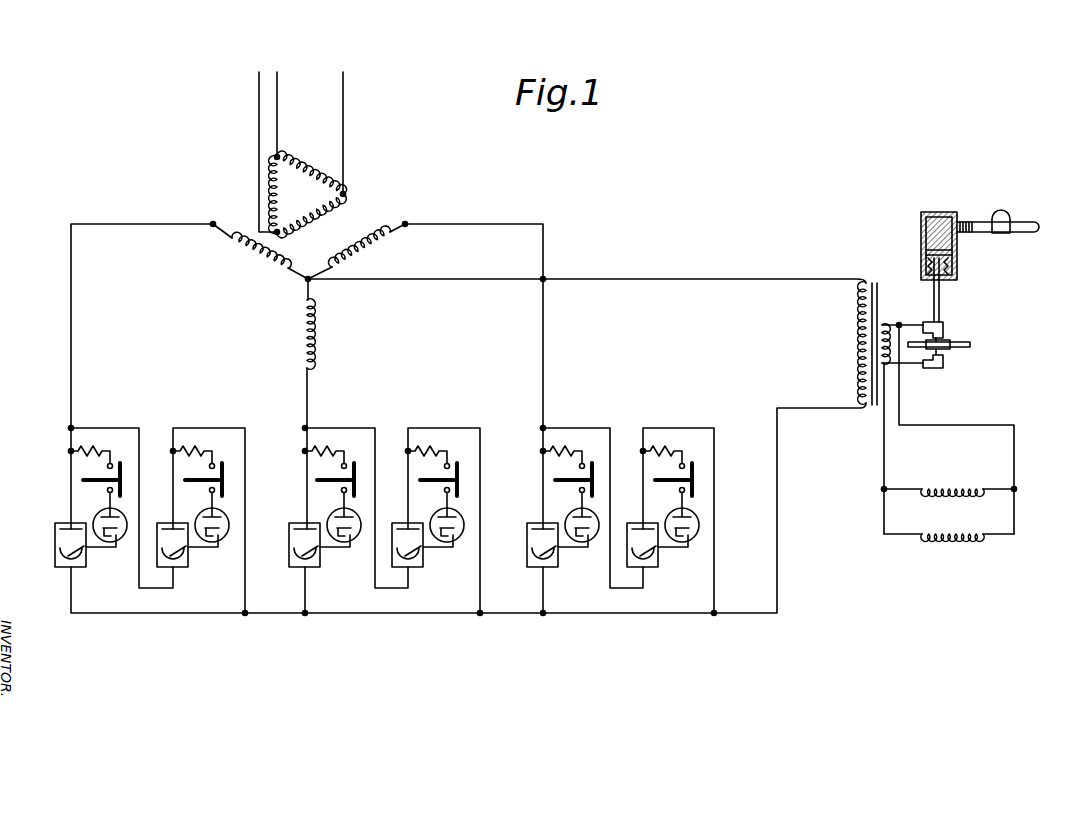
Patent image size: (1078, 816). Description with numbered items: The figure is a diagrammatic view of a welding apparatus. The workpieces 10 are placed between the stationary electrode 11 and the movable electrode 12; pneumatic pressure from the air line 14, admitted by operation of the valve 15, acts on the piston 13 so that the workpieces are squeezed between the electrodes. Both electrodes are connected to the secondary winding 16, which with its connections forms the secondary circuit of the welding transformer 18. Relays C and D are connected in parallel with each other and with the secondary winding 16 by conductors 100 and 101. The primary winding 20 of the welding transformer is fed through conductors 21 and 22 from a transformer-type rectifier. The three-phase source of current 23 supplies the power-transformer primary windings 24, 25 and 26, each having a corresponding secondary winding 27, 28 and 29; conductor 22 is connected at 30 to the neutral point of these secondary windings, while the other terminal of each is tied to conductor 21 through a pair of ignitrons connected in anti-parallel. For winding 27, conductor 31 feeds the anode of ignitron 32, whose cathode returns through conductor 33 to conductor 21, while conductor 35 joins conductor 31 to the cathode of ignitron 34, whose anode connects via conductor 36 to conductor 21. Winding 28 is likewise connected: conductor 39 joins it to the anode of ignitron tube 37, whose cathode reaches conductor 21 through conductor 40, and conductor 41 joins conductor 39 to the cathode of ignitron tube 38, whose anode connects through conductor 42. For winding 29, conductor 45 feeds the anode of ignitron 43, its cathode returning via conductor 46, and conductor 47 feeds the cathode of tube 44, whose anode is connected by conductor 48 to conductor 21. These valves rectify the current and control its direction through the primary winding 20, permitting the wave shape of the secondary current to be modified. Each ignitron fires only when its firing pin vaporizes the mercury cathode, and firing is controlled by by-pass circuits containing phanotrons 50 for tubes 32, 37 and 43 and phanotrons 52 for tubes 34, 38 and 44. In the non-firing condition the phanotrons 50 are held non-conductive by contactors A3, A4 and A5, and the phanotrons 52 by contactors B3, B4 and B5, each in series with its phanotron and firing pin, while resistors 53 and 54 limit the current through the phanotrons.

The workpieces 10 is at (951, 342).
The stationary electrode 11 is at (944, 365).
The movable electrode 12 is at (953, 298).
The piston 13 is at (936, 246).
The air line 14 is at (1025, 219).
The valve 15 is at (999, 211).
The secondary winding 16 is at (899, 325).
The welding transformer 18 is at (867, 330).
The primary winding 20 is at (860, 345).
The conductor 21 is at (748, 613).
The conductor 22 is at (670, 278).
The source of current 23 is at (320, 112).
The primary winding 24 is at (275, 187).
The primary winding 25 is at (325, 208).
The primary winding 26 is at (304, 169).
The secondary winding 27 is at (262, 258).
The secondary winding 28 is at (313, 328).
The secondary winding 29 is at (377, 247).
The neutral point connection 30 is at (311, 281).
The conductor 31 is at (71, 318).
The ignitron 32 is at (55, 530).
The conductor 33 is at (68, 597).
The ignitron 34 is at (158, 530).
The conductor 35 is at (112, 421).
The conductor 36 is at (246, 506).
The ignitron tube 37 is at (289, 553).
The ignitron tube 38 is at (393, 530).
The conductor 39 is at (308, 389).
The conductor 40 is at (308, 609).
The conductor 41 is at (341, 428).
The conductor 42 is at (481, 520).
The ignitron 43 is at (527, 554).
The ignitron tube 44 is at (628, 530).
The conductor 45 is at (545, 345).
The conductor 46 is at (545, 597).
The conductor 47 is at (572, 428).
The conductor 48 is at (718, 519).
The phanotrons 50 is at (119, 556).
The phanotrons 52 is at (222, 556).
The resistors 53 is at (80, 447).
The resistors 54 is at (199, 448).
The conductor 100 is at (1014, 462).
The conductor 101 is at (884, 465).
The contactor A3 is at (122, 463).
The contactor B3 is at (225, 463).
The contactor A4 is at (356, 463).
The contactor B4 is at (459, 463).
The contactor A5 is at (594, 463).
The contactor B5 is at (694, 465).
The relay C is at (950, 485).
The relay D is at (949, 538).